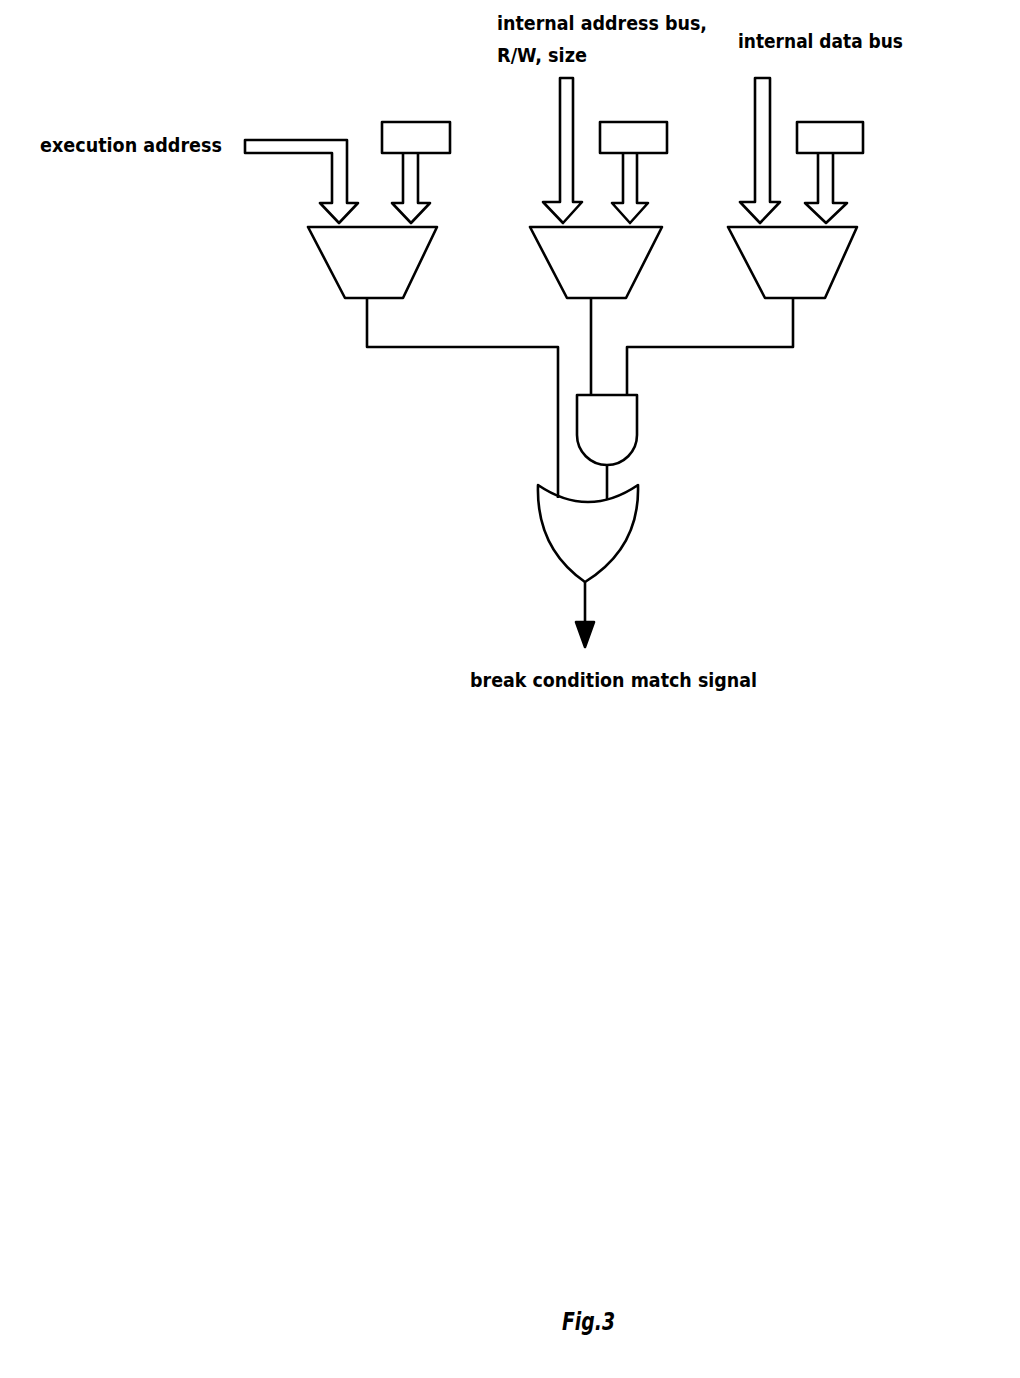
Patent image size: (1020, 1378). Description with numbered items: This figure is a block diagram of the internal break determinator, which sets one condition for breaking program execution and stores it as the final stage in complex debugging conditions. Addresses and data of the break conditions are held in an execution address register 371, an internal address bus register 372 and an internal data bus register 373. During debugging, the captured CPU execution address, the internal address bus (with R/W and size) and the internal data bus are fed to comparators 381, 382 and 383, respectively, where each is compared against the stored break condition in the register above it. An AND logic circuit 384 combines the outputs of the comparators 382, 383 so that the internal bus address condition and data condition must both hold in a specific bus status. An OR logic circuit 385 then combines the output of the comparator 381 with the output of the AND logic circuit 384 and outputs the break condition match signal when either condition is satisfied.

The execution address register 371 is at (418, 122).
The internal address bus register 372 is at (640, 122).
The internal data bus register 373 is at (832, 122).
The comparator 381 is at (345, 292).
The comparator 382 is at (567, 292).
The comparator 383 is at (765, 292).
The AND logic circuit 384 is at (630, 432).
The OR logic circuit 385 is at (558, 523).